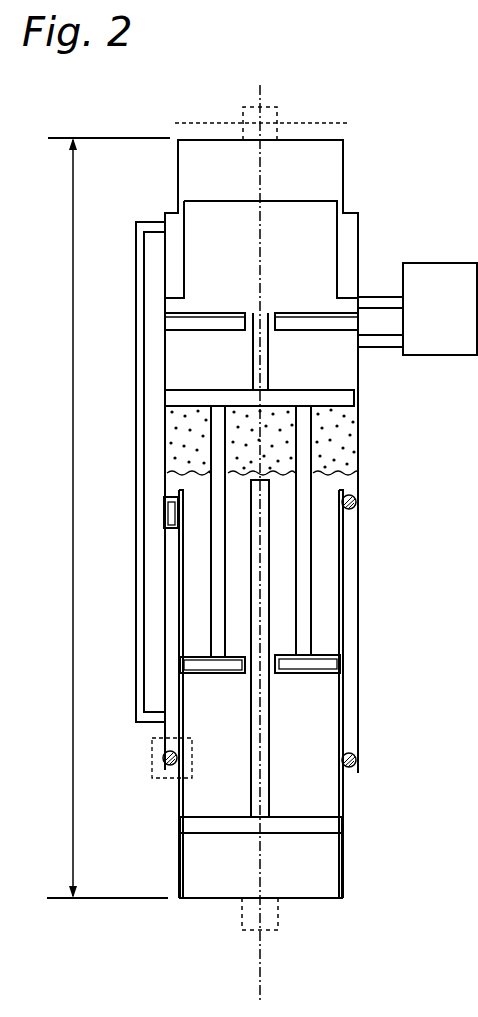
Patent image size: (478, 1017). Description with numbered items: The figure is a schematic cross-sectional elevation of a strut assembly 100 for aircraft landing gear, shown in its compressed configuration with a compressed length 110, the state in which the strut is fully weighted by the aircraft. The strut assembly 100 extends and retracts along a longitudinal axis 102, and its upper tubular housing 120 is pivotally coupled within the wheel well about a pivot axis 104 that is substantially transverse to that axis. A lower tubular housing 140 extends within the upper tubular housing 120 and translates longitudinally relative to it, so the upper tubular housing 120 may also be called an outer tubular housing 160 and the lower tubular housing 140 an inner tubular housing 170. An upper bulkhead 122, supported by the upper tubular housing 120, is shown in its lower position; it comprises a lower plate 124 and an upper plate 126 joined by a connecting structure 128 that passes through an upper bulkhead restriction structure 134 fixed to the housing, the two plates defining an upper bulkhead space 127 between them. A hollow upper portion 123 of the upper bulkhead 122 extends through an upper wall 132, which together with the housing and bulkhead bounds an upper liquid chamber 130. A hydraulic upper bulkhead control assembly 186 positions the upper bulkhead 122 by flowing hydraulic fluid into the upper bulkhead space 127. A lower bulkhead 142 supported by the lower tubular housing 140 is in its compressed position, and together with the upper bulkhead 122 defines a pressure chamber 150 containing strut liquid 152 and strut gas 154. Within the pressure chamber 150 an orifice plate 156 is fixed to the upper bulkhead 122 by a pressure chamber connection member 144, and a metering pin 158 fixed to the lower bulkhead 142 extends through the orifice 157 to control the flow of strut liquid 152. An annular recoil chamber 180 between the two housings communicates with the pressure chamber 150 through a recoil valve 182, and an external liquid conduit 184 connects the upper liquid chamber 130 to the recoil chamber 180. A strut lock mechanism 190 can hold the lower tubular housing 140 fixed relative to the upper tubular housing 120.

The strut assembly 100 is at (183, 86).
The longitudinal axis 102 is at (262, 970).
The pivot axis 104 is at (308, 120).
The compressed length 110 is at (72, 514).
The upper tubular housing 120 is at (360, 436).
The upper bulkhead 122 is at (334, 412).
The upper portion 123 is at (182, 268).
The lower plate 124 is at (343, 392).
The upper plate 126 is at (270, 318).
The upper bulkhead space 127 is at (187, 350).
The connecting structure 128 is at (250, 358).
The upper liquid chamber 130 is at (173, 216).
The upper wall 132 is at (356, 224).
The upper bulkhead restriction structure 134 is at (183, 331).
The lower tubular housing 140 is at (343, 870).
The lower bulkhead 142 is at (328, 820).
The pressure chamber connection member 144 is at (312, 558).
The pressure chamber 150 is at (340, 452).
The strut liquid 152 is at (337, 580).
The strut gas 154 is at (184, 425).
The orifice plate 156 is at (315, 673).
The orifice 157 is at (250, 667).
The metering pin 158 is at (252, 793).
The outer tubular housing 160 is at (357, 665).
The inner tubular housing 170 is at (343, 888).
The recoil chamber 180 is at (172, 582).
The recoil valve 182 is at (163, 517).
The liquid conduit 184 is at (143, 637).
The hydraulic upper bulkhead control assembly 186 is at (467, 326).
The strut lock mechanism 190 is at (168, 780).